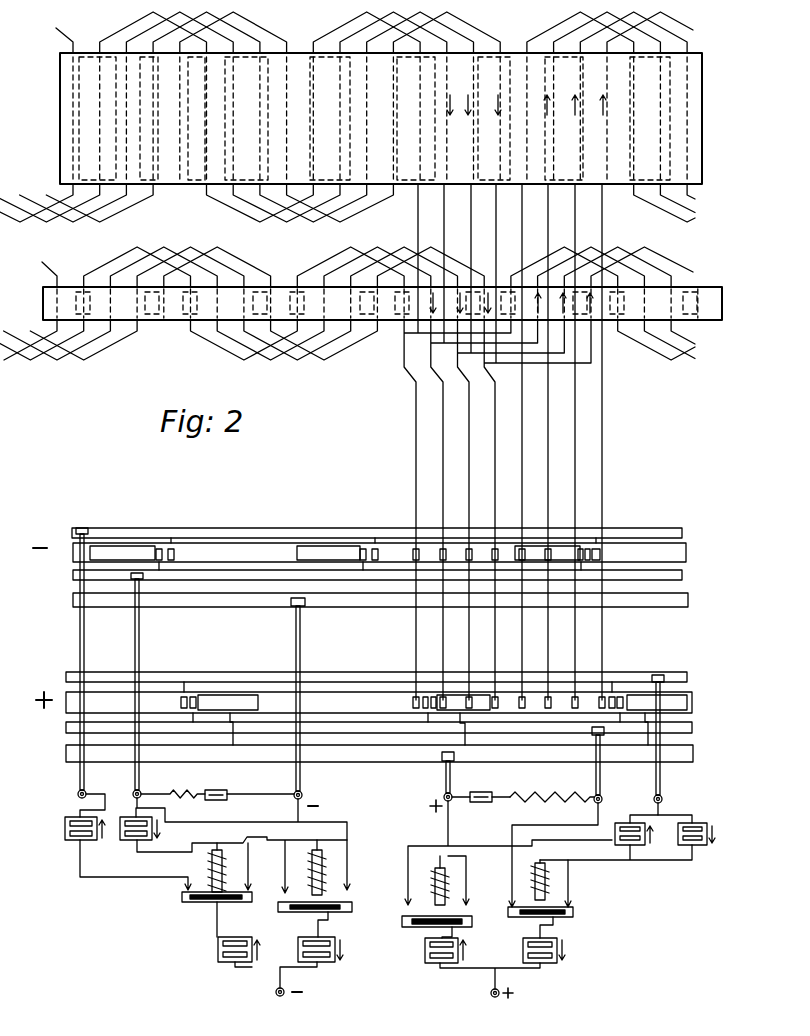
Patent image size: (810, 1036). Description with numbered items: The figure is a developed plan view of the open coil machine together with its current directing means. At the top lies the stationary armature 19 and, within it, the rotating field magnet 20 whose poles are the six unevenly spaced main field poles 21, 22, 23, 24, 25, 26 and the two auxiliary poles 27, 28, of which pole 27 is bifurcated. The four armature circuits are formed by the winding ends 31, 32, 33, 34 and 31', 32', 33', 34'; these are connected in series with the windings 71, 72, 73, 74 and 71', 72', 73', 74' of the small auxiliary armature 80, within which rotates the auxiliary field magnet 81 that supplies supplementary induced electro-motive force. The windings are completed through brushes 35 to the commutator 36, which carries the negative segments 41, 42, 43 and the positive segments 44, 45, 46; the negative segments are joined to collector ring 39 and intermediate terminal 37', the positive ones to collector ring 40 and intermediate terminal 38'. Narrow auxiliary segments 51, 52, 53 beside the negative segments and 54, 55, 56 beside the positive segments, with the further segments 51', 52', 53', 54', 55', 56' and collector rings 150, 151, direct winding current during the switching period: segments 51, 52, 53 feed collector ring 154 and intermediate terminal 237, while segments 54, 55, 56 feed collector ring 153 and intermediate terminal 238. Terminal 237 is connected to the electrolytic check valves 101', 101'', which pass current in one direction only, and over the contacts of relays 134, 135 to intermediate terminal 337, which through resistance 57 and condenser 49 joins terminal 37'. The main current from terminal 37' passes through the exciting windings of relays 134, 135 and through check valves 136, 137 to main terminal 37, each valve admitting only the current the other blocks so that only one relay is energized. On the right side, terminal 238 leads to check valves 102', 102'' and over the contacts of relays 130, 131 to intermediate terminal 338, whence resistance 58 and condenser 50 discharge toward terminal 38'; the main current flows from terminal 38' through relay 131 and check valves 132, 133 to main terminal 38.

The armature 19 is at (703, 110).
The field magnet 20 is at (665, 150).
The main field pole 21 is at (82, 152).
The main field pole 22 is at (228, 160).
The main field pole 23 is at (313, 155).
The main field pole 24 is at (433, 155).
The main field pole 25 is at (548, 158).
The main field pole 26 is at (633, 160).
The auxiliary pole 27 is at (155, 155).
The auxiliary pole 28 is at (478, 150).
The armature winding end 31 is at (457, 442).
The armature winding end 32 is at (484, 442).
The armature winding end 33 is at (511, 442).
The armature winding end 34 is at (537, 442).
The armature winding end 31' is at (523, 442).
The armature winding end 32' is at (549, 442).
The armature winding end 33' is at (576, 442).
The armature winding end 34' is at (603, 442).
The brushes 35 is at (440, 548).
The commutator 36 is at (672, 555).
The main terminal 37 is at (287, 1002).
The intermediate terminal 37' is at (312, 698).
The main terminal 38 is at (500, 1003).
The intermediate terminal 38' is at (434, 776).
The collector ring 39 is at (668, 607).
The collector ring 40 is at (694, 752).
The commutator segment 41 is at (560, 552).
The commutator segment 42 is at (120, 543).
The commutator segment 43 is at (320, 550).
The commutator segment 44 is at (452, 694).
The commutator segment 45 is at (657, 720).
The commutator segment 46 is at (228, 720).
The condenser 49 is at (220, 790).
The condenser 50 is at (476, 790).
The auxiliary segment 51 is at (628, 530).
The auxiliary segment 51' is at (617, 525).
The auxiliary segment 52 is at (187, 524).
The auxiliary segment 52' is at (159, 529).
The auxiliary segment 53 is at (384, 586).
The auxiliary segment 53' is at (353, 592).
The auxiliary segment 54 is at (395, 678).
The auxiliary segment 54' is at (429, 685).
The auxiliary segment 55 is at (632, 677).
The auxiliary segment 55' is at (649, 688).
The auxiliary segment 56 is at (173, 678).
The auxiliary segment 56' is at (209, 685).
The resistance 57 is at (193, 790).
The resistance 58 is at (542, 792).
The auxiliary armature winding end 71 is at (348, 263).
The auxiliary armature winding end 72 is at (375, 256).
The auxiliary armature winding end 73 is at (404, 256).
The auxiliary armature winding end 74 is at (430, 257).
The auxiliary armature winding end 71' is at (564, 265).
The auxiliary armature winding end 72' is at (591, 262).
The auxiliary armature winding end 73' is at (617, 262).
The auxiliary armature winding end 74' is at (642, 258).
The auxiliary armature 80 is at (712, 301).
The auxiliary field magnet 81 is at (683, 318).
The electric check valve 101' is at (227, 845).
The electric check valve 101'' is at (113, 842).
The electric check valve 102' is at (698, 842).
The electric check valve 102'' is at (616, 844).
The relay 130 is at (433, 880).
The relay 131 is at (532, 882).
The electric check valve 132 is at (424, 950).
The electric check valve 133 is at (558, 962).
The relay 134 is at (223, 873).
The relay 135 is at (323, 873).
The electric check valve 136 is at (215, 956).
The electric check valve 137 is at (335, 962).
The collector ring 150 is at (683, 575).
The collector ring 151 is at (693, 727).
The collector ring 153 is at (688, 677).
The collector ring 154 is at (683, 533).
The intermediate terminal 237 is at (78, 792).
The intermediate terminal 238 is at (663, 795).
The intermediate terminal 337 is at (134, 791).
The intermediate terminal 338 is at (603, 795).